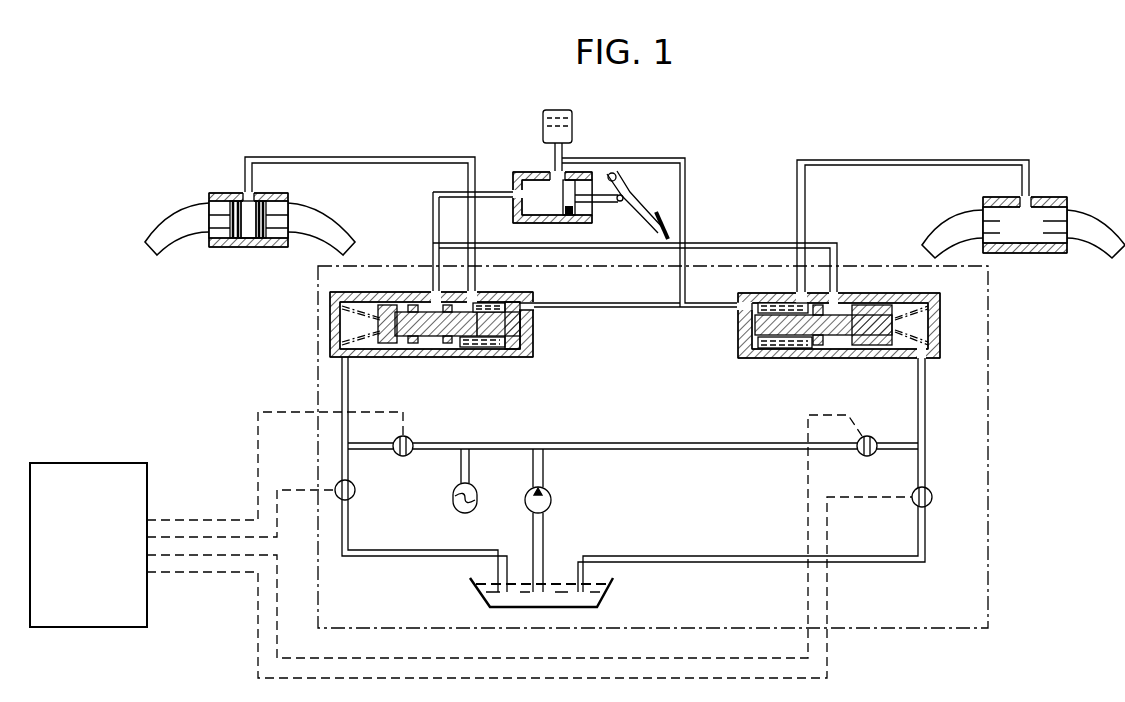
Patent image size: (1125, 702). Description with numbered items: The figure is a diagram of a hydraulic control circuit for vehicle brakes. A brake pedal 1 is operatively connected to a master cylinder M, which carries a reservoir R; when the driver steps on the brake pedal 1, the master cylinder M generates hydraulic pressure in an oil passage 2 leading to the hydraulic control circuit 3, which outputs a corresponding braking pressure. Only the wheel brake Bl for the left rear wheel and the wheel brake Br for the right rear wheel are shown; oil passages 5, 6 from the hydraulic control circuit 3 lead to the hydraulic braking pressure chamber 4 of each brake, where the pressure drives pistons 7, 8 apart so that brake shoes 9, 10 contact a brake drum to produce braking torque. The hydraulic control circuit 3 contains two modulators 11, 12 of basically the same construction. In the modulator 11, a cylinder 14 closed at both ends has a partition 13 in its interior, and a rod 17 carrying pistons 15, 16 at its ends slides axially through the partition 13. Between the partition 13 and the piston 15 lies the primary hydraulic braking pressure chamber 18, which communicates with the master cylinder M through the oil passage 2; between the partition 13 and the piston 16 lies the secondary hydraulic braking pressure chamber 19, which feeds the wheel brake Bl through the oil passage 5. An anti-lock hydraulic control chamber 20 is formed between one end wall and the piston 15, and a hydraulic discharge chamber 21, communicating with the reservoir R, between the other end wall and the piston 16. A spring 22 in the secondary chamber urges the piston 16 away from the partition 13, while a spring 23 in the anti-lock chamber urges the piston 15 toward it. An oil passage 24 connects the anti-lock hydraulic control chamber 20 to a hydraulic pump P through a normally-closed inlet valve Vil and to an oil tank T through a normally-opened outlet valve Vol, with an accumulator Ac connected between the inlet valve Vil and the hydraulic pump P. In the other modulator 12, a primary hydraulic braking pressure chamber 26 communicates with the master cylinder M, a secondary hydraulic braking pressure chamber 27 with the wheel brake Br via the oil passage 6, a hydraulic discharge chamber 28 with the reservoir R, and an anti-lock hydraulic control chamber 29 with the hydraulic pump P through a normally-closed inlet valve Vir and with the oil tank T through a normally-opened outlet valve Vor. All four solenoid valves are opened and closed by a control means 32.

The brake pedal 1 is at (655, 218).
The oil passage 2 is at (489, 196).
The hydraulic control circuit 3 is at (318, 378).
The hydraulic braking pressure chamber 4 is at (247, 247).
The oil passage 5 is at (381, 160).
The oil passage 6 is at (876, 160).
The piston 7 is at (222, 247).
The piston 8 is at (272, 247).
The brake shoe 9 is at (176, 218).
The brake shoe 10 is at (320, 228).
The modulator 11 is at (426, 344).
The modulator 12 is at (833, 358).
The partition 13 is at (453, 350).
The cylinder 14 is at (373, 355).
The piston 15 is at (408, 352).
The piston 16 is at (514, 352).
The rod 17 is at (479, 322).
The primary hydraulic braking pressure chamber 18 is at (433, 350).
The secondary hydraulic braking pressure chamber 19 is at (487, 348).
The anti-lock hydraulic control chamber 20 is at (345, 318).
The hydraulic discharge chamber 21 is at (533, 310).
The spring 22 is at (508, 305).
The spring 23 is at (345, 342).
The oil passage 24 is at (345, 428).
The primary hydraulic braking pressure chamber 26 is at (843, 350).
The secondary hydraulic braking pressure chamber 27 is at (795, 350).
The hydraulic discharge chamber 28 is at (742, 318).
The anti-lock hydraulic control chamber 29 is at (926, 337).
The control means 32 is at (98, 546).
The master cylinder M is at (527, 177).
The reservoir R is at (572, 121).
The wheel brake Bl is at (200, 183).
The wheel brake Br is at (1047, 190).
The oil tank T is at (478, 595).
The hydraulic pump P is at (551, 499).
The accumulator Ac is at (474, 510).
The inlet valve Vil is at (402, 456).
The outlet valve Vol is at (352, 499).
The inlet valve Vir is at (878, 433).
The outlet valve Vor is at (931, 494).